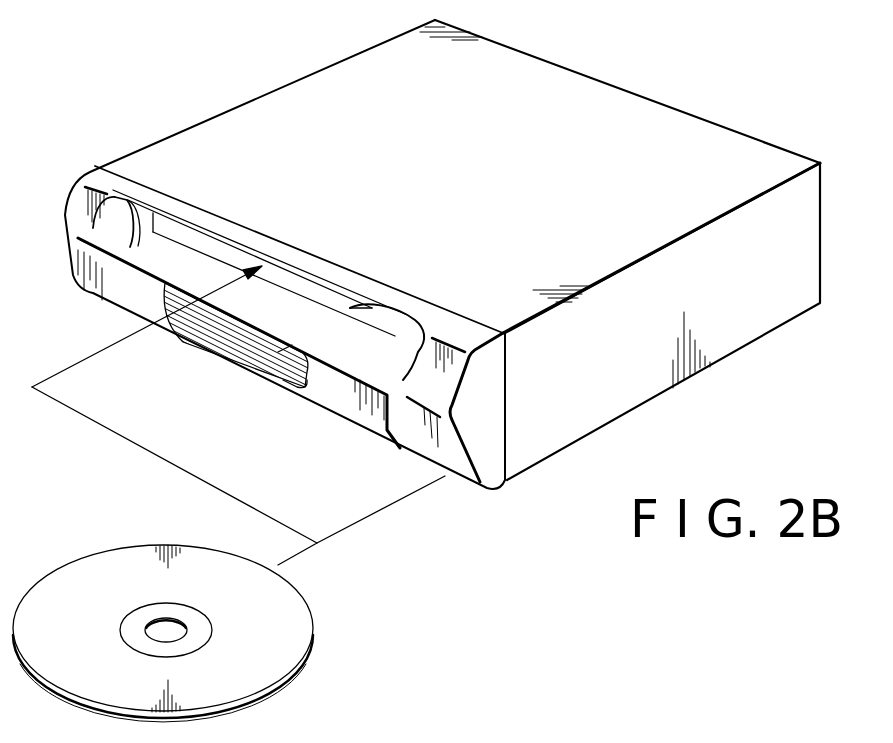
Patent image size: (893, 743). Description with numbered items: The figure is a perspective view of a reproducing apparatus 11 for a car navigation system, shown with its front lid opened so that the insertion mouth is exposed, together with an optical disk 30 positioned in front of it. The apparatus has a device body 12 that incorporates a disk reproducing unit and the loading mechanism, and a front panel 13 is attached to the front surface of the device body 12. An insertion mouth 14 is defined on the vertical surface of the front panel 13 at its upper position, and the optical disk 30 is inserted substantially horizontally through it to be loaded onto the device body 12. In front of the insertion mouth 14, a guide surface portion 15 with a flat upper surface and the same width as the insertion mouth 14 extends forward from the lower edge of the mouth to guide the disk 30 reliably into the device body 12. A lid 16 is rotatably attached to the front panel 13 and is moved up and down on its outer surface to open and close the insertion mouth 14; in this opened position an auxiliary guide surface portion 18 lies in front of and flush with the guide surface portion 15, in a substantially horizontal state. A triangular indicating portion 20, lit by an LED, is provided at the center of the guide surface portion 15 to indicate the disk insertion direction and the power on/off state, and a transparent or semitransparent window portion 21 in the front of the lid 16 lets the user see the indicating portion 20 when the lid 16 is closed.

The reproducing apparatus 11 is at (232, 88).
The device body 12 is at (173, 152).
The front panel 13 is at (441, 452).
The insertion mouth 14 is at (293, 278).
The guide surface portion 15 is at (275, 310).
The lid 16 is at (340, 413).
The auxiliary guide surface portion 18 is at (275, 376).
The window portion 21 is at (290, 345).
The indicating portion 20 is at (200, 345).
The optical disk 30 is at (85, 580).